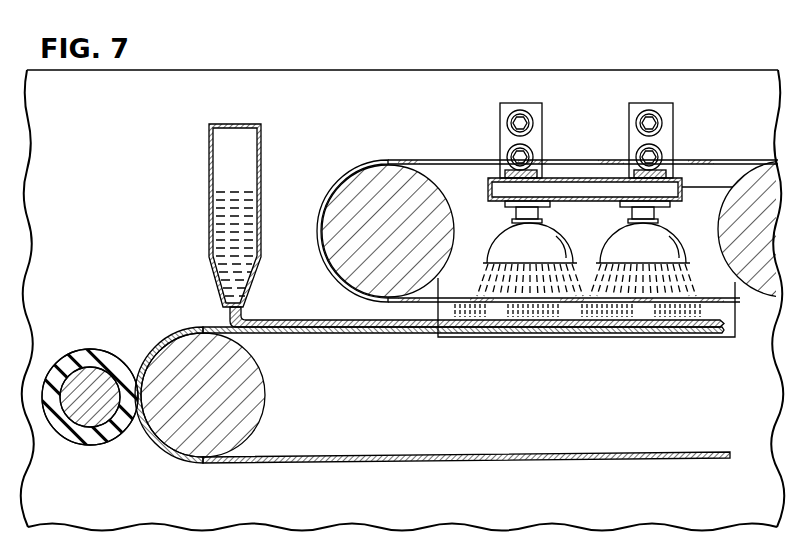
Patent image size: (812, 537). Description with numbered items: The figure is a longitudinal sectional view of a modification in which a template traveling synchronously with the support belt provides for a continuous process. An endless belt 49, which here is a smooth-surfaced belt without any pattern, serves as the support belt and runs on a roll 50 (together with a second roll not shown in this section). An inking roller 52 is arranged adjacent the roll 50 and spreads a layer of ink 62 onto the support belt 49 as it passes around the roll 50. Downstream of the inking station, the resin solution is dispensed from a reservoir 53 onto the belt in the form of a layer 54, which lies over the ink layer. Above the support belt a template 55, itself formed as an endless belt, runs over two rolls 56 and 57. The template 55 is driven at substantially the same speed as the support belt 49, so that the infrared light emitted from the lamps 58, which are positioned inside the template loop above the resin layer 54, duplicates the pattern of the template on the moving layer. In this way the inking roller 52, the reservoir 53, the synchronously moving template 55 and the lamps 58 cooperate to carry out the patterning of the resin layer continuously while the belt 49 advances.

The endless belt 49 is at (320, 462).
The roll 50 is at (250, 405).
The inking roller 52 is at (88, 412).
The reservoir 53 is at (232, 145).
The layer 54 is at (290, 322).
The template 55 is at (436, 160).
The roll 56 is at (352, 195).
The roll 57 is at (737, 243).
The lamps 58 is at (550, 247).
The layer of ink 62 is at (158, 338).